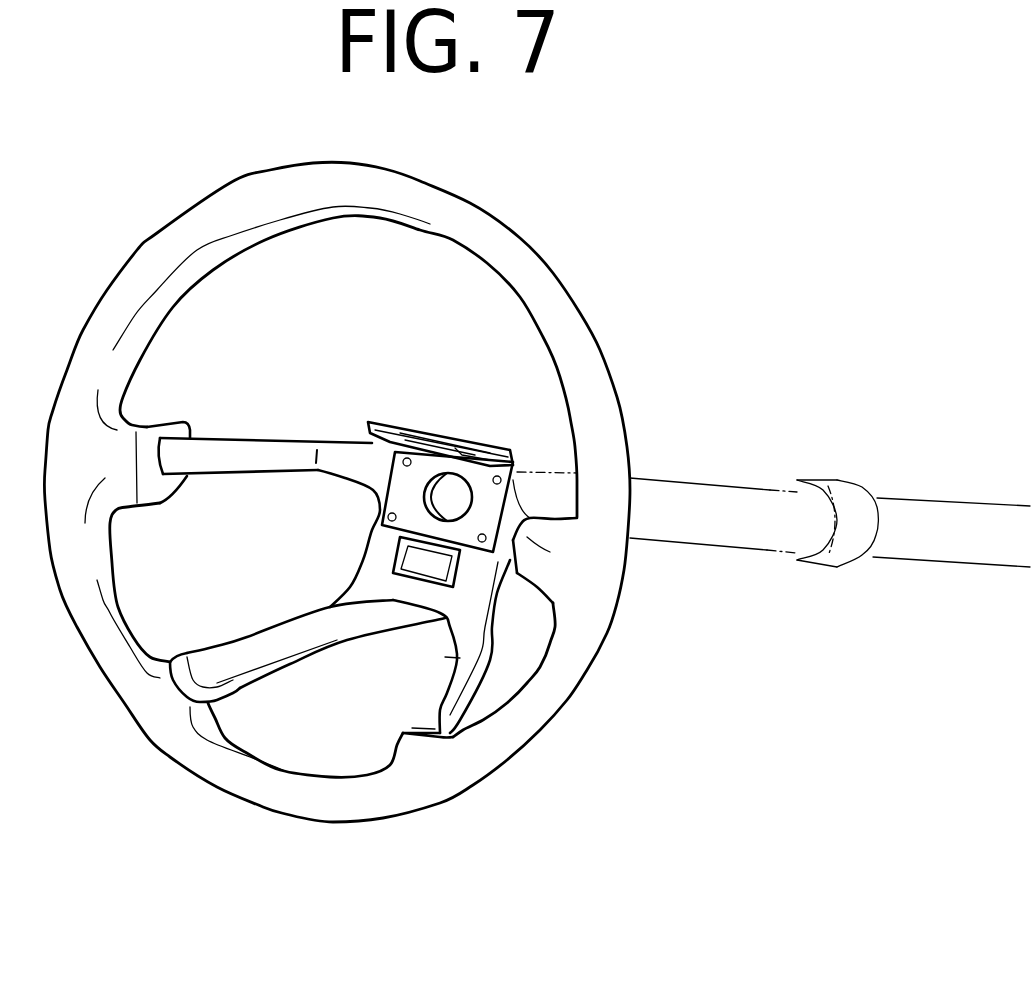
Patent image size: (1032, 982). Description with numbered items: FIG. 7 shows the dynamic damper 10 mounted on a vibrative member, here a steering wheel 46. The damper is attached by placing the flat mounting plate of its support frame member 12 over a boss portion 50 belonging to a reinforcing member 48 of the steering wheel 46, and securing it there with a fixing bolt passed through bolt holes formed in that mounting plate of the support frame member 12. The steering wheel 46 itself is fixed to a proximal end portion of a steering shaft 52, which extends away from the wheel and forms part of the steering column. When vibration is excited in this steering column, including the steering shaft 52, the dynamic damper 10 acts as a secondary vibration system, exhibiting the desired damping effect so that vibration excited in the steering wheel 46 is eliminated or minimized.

The dynamic damper 10 is at (445, 388).
The support frame member 12 is at (403, 488).
The steering wheel 46 is at (533, 224).
The reinforcing member 48 is at (257, 650).
The boss portion 50 is at (472, 577).
The steering shaft 52 is at (675, 507).